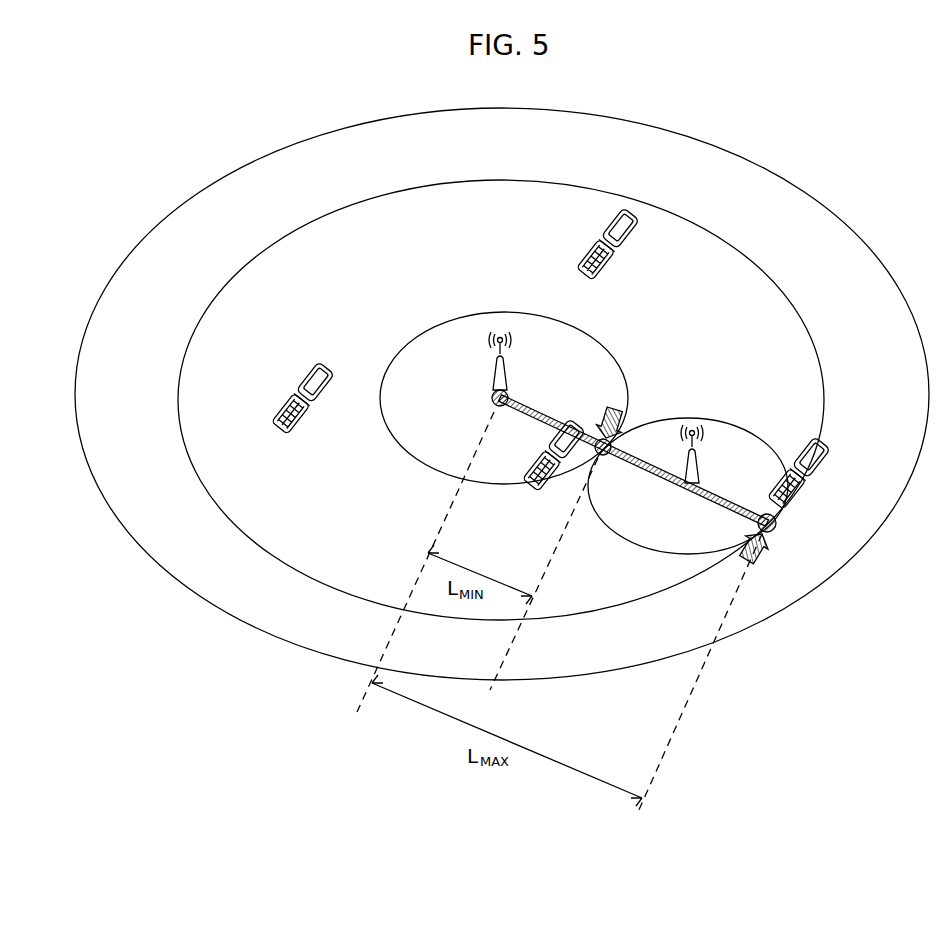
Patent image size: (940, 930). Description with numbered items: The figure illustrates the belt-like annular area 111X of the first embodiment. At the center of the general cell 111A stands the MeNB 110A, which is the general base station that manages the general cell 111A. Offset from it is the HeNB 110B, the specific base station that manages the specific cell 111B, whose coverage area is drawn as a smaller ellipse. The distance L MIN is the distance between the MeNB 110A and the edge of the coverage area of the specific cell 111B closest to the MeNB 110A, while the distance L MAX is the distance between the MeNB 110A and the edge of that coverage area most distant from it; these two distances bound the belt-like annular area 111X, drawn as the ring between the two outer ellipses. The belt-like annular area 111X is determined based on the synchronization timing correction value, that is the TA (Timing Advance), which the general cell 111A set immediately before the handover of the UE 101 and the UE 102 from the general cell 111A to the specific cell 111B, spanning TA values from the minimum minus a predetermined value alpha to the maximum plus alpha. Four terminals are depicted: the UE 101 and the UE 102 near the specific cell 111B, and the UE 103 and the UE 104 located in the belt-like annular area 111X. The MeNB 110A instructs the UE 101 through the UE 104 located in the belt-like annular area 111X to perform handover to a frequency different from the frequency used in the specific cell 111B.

The UE 101 is at (543, 492).
The UE 102 is at (806, 502).
The UE 103 is at (302, 433).
The UE 104 is at (630, 250).
The MeNB 110A is at (495, 382).
The HeNB 110B is at (686, 468).
The general cell 111A is at (775, 172).
The belt-like annular area 111X is at (733, 283).
The specific cell 111B is at (690, 553).